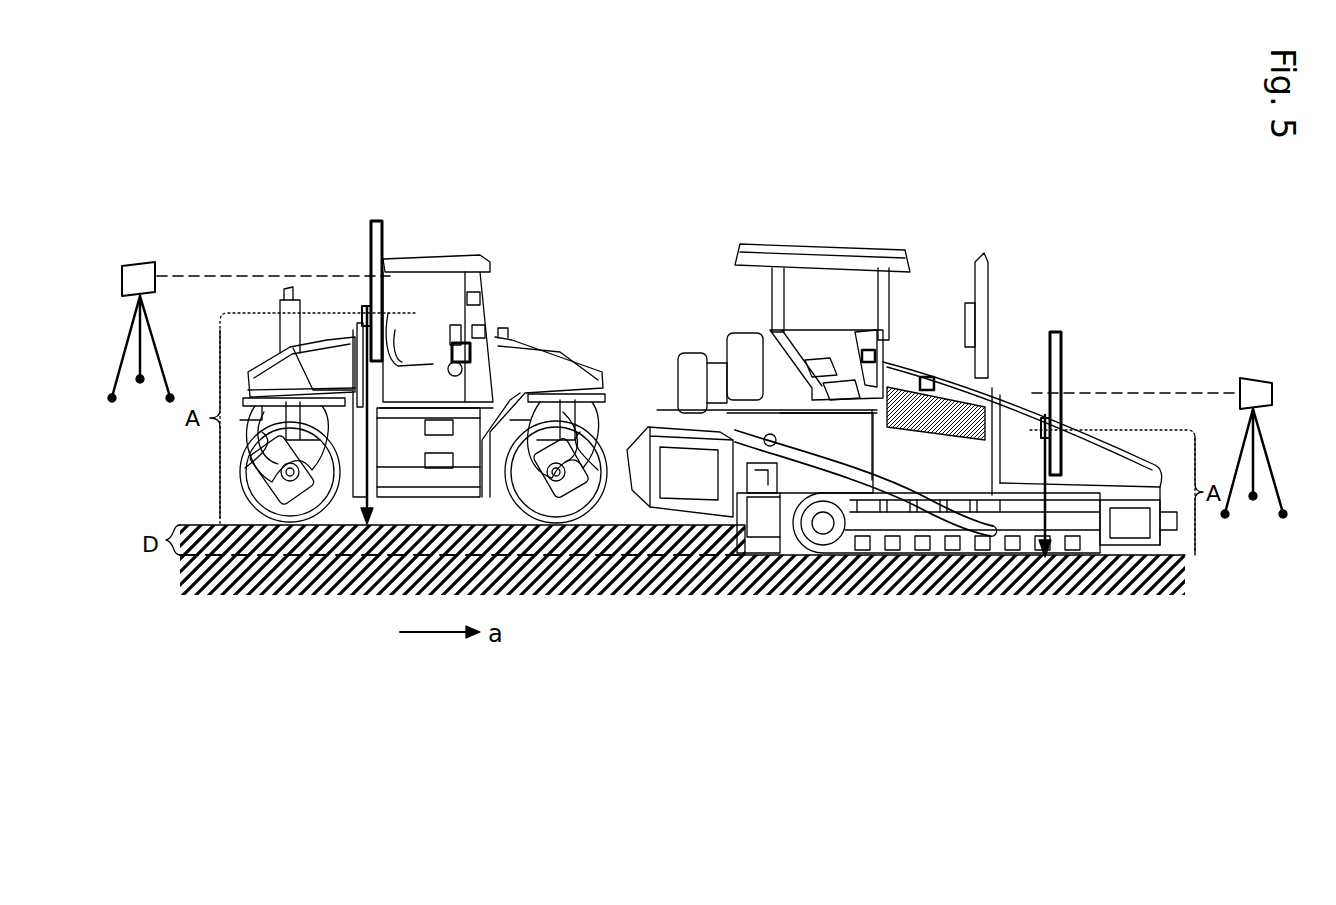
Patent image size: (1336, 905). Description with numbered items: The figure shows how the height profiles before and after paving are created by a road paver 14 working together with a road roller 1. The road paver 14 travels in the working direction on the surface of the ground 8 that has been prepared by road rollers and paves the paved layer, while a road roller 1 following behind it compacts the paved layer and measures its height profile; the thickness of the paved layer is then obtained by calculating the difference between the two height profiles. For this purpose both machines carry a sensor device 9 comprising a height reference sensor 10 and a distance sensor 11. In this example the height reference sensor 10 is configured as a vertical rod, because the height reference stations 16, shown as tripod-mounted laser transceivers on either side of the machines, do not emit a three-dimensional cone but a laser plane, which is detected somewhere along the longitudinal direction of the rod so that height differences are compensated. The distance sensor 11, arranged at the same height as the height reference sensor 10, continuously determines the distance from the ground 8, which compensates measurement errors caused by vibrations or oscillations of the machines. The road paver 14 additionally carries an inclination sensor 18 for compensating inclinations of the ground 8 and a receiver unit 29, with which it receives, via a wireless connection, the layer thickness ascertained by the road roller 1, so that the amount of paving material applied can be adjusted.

The road roller 1 is at (413, 258).
The ground 8 is at (707, 568).
The sensor device 9 is at (400, 305).
The height reference sensor 10 is at (372, 245).
The distance sensor 11 is at (364, 305).
The road paver 14 is at (832, 250).
The height reference station 16 is at (140, 277).
The inclination sensor 18 is at (927, 375).
The receiver unit 29 is at (865, 348).